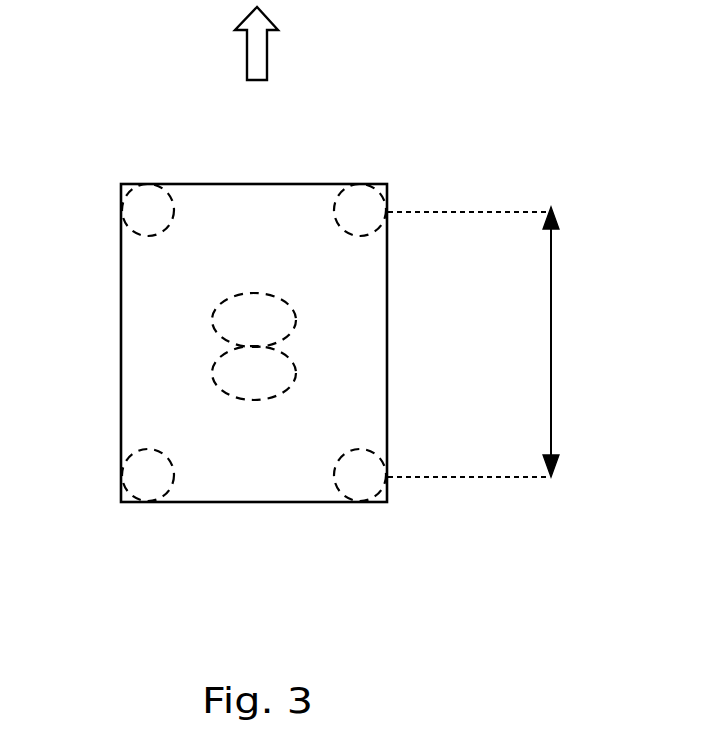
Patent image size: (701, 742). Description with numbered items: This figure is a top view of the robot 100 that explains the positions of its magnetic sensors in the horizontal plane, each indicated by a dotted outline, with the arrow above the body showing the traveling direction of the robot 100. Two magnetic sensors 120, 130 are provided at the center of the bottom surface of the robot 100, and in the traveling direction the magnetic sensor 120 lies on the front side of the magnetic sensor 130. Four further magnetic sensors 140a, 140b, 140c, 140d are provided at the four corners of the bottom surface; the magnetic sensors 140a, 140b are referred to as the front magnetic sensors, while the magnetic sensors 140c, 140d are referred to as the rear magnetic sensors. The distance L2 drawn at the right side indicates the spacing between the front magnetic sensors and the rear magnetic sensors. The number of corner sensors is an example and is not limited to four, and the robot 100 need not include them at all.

The robot 100 is at (270, 184).
The magnetic sensor 120 is at (257, 293).
The magnetic sensor 130 is at (250, 399).
The magnetic sensor 140a is at (142, 238).
The magnetic sensor 140b is at (366, 237).
The magnetic sensor 140c is at (138, 452).
The magnetic sensor 140d is at (370, 451).
The distance L2 is at (490, 342).